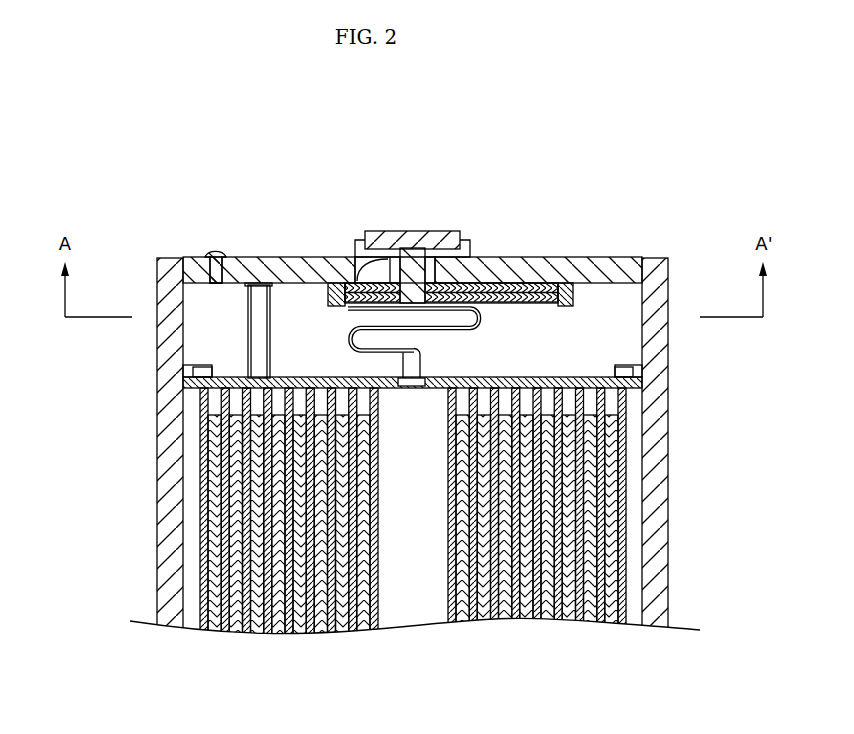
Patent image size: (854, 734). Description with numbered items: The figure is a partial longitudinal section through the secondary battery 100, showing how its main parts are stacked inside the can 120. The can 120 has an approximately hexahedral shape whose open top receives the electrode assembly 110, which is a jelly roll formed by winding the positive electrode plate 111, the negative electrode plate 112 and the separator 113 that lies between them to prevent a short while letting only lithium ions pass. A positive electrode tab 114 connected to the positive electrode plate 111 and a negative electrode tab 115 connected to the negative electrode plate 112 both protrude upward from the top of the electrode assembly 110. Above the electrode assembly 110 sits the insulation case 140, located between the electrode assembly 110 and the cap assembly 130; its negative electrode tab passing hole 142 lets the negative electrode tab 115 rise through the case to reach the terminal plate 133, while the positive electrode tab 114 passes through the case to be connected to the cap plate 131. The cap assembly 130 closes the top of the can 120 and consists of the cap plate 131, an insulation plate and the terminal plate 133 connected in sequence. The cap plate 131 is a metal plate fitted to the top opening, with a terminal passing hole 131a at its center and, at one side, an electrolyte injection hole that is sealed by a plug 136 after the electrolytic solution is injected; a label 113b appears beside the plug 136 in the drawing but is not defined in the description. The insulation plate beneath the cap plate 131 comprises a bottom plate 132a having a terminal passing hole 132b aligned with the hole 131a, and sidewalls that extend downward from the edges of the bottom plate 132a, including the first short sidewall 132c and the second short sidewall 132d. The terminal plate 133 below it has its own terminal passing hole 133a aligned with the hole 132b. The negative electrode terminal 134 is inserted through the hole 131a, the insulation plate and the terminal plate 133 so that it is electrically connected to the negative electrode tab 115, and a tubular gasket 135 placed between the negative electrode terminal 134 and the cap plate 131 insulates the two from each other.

The secondary battery 100 is at (48, 164).
The electrode assembly 110 is at (481, 545).
The positive electrode plate 111 is at (619, 627).
The negative electrode plate 112 is at (589, 626).
The separator 113 is at (607, 626).
The electrolyte injection hole 113b is at (211, 255).
The positive electrode tab 114 is at (258, 291).
The negative electrode tab 115 is at (348, 336).
The can 120 is at (663, 538).
The cap assembly 130 is at (449, 234).
The cap plate 131 is at (630, 257).
The terminal passing hole 131a is at (387, 257).
The bottom plate 132a is at (523, 283).
The terminal passing hole 132b is at (360, 282).
The first short sidewall 132c is at (330, 302).
The second short sidewall 132d is at (567, 283).
The terminal plate 133 is at (545, 303).
The terminal passing hole 133a is at (343, 283).
The negative electrode terminal 134 is at (431, 231).
The tubular gasket 135 is at (468, 240).
The plug 136 is at (216, 252).
The insulation case 140 is at (232, 377).
The negative electrode tab passing hole 142 is at (432, 380).